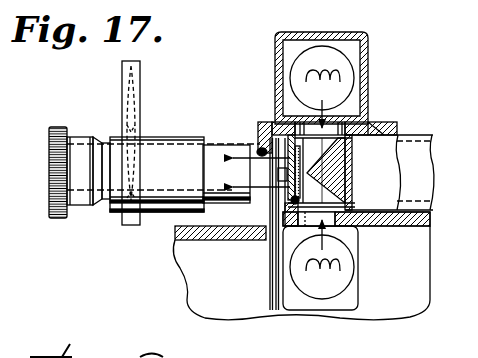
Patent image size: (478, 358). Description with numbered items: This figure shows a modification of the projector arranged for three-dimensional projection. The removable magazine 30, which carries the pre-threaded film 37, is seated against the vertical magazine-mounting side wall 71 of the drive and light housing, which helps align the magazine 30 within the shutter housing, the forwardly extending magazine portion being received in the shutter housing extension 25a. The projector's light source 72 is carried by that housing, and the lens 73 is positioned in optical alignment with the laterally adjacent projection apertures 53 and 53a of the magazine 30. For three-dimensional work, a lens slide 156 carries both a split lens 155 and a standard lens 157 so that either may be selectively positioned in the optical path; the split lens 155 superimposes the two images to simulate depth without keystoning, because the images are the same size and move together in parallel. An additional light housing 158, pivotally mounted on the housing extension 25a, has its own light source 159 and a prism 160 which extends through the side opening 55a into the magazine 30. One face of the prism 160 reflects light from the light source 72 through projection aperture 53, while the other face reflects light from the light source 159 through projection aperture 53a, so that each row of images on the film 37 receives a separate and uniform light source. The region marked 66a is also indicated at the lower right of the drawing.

The lens 73 is at (72, 203).
The 3-D split lens 155 is at (145, 150).
The lens slide 156 is at (140, 68).
The standard lens 157 is at (141, 83).
The light housing 158 is at (368, 50).
The light source 159 is at (347, 84).
The projection aperture 53a is at (261, 149).
The side opening 55a is at (373, 124).
The magazine 30 is at (440, 133).
The projection aperture 53 is at (290, 192).
The prism 160 is at (332, 168).
The film 37 is at (302, 223).
The magazine-mounting side wall 71 is at (415, 218).
The light source 72 is at (345, 276).
The shutter housing extension 25a is at (180, 268).
The housing wall 66a is at (477, 348).